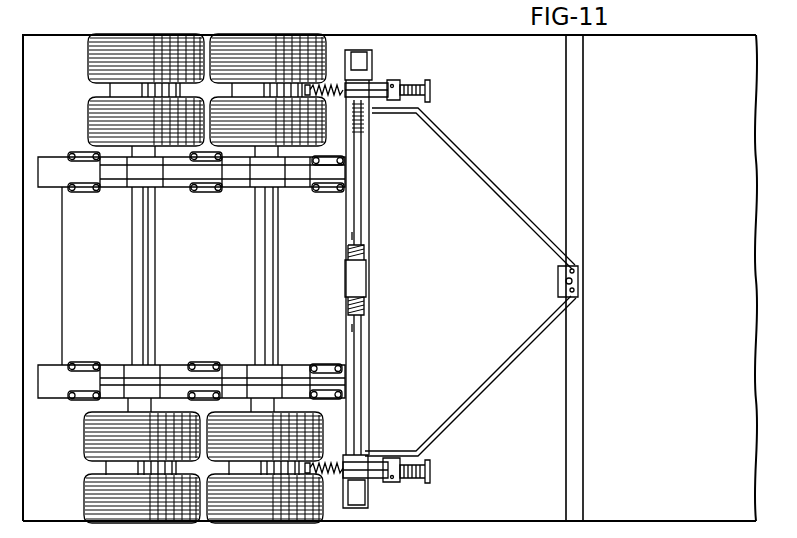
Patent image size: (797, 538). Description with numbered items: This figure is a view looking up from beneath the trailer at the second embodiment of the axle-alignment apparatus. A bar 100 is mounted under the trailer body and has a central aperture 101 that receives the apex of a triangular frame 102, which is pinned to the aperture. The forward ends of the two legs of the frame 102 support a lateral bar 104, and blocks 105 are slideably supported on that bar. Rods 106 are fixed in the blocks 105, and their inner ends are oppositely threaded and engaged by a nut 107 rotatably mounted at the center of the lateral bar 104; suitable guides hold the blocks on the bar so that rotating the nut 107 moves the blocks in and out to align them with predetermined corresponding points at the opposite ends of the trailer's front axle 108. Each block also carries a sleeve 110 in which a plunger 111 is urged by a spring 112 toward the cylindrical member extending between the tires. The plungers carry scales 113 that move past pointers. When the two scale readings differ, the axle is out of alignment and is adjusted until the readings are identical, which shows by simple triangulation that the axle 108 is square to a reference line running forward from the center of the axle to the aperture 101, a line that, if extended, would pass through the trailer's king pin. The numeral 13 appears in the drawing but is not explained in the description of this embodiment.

The tie rod 13 is at (346, 232).
The bar 100 is at (575, 114).
The central aperture 101 is at (580, 275).
The triangular frame 102 is at (524, 222).
The lateral bar 104 is at (369, 213).
The blocks 105 is at (372, 80).
The rods 106 is at (362, 157).
The nut 107 is at (363, 275).
The front axle 108 is at (258, 254).
The sleeve 110 is at (376, 86).
The plunger 111 is at (425, 84).
The spring 112 is at (310, 92).
The scales 113 is at (418, 100).